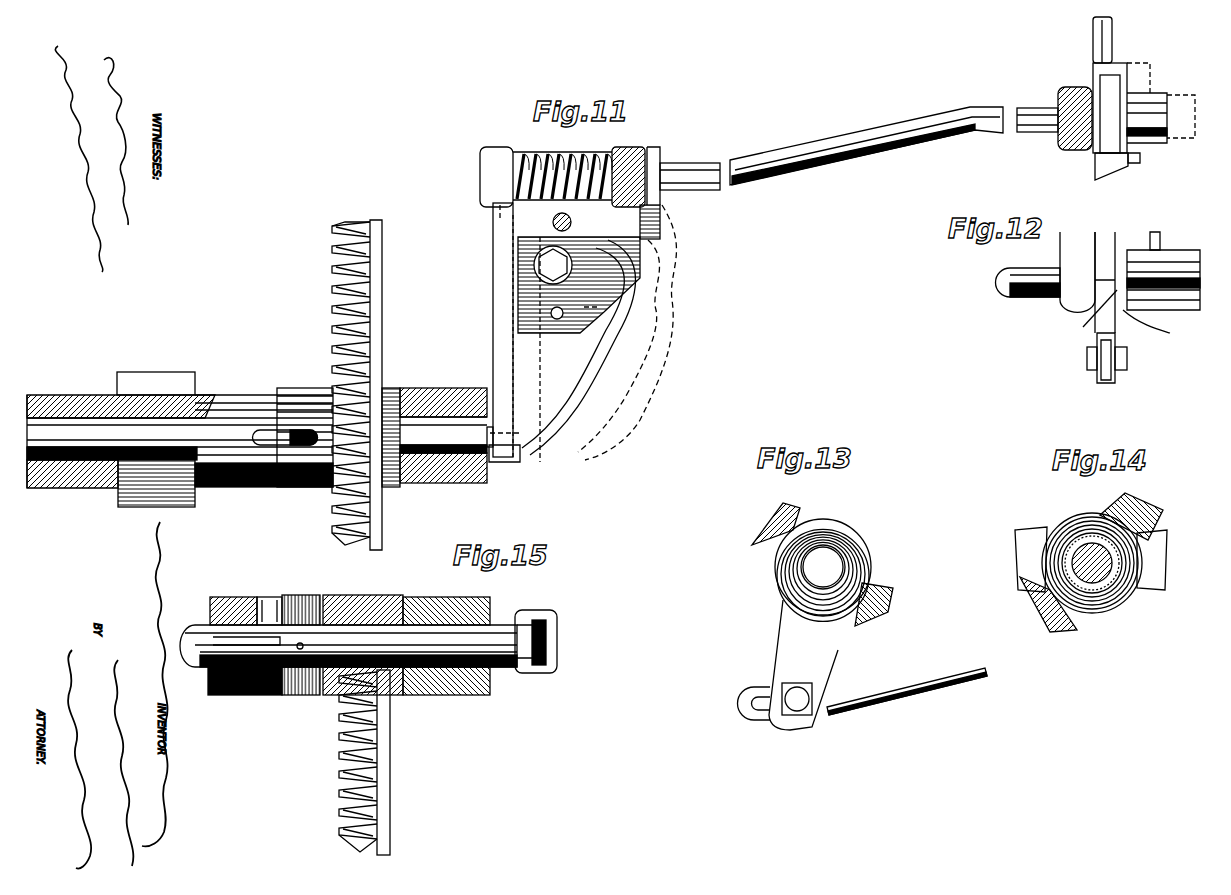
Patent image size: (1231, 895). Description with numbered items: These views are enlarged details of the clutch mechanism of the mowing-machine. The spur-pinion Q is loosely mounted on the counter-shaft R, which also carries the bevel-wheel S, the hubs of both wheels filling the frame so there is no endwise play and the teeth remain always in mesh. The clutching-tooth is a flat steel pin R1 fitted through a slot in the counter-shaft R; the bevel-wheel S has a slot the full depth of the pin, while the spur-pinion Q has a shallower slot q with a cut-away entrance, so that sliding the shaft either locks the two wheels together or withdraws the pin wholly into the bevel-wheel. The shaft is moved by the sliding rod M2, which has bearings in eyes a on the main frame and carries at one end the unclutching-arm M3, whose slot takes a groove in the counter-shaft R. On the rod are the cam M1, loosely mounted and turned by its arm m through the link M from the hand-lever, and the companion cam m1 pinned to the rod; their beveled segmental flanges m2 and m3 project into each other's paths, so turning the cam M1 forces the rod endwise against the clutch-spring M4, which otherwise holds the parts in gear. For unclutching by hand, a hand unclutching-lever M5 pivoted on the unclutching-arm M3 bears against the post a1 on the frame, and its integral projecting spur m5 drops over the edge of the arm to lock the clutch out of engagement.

In FIG. 11, the spur-pinion Q is at (143, 383).
In FIG. 15, the spur-pinion Q is at (227, 598).
In FIG. 11, the counter-shaft R is at (93, 470).
In FIG. 15, the counter-shaft R is at (197, 633).
In FIG. 11, the flat steel pin R1 is at (270, 437).
In FIG. 15, the flat steel pin R1 is at (303, 597).
In FIG. 11, the slot q is at (258, 483).
In FIG. 15, the slot q is at (268, 600).
In FIG. 11, the bevel-wheel S is at (370, 328).
In FIG. 15, the bevel-wheel S is at (377, 757).
In FIG. 12, the eyes a is at (1077, 272).
In FIG. 11, the post a1 is at (553, 222).
In FIG. 11, the link M is at (1107, 42).
In FIG. 12, the link M is at (1108, 373).
In FIG. 13, the link M is at (923, 690).
In FIG. 12, the cam M1 is at (1107, 263).
In FIG. 13, the cam M1 is at (860, 550).
In FIG. 11, the sliding rod M2 is at (825, 152).
In FIG. 12, the sliding rod M2 is at (1020, 296).
In FIG. 11, the unclutching-arm M3 is at (512, 298).
In FIG. 15, the unclutching-arm M3 is at (552, 643).
In FIG. 11, the clutch-spring M4 is at (585, 152).
In FIG. 11, the hand unclutching-lever M5 is at (575, 357).
In FIG. 12, the arm m is at (1120, 333).
In FIG. 13, the arm m is at (793, 658).
In FIG. 11, the companion cam m1 is at (1142, 163).
In FIG. 12, the companion cam m1 is at (1160, 244).
In FIG. 14, the companion cam m1 is at (1105, 523).
In FIG. 12, the projecting flanges m2 is at (1123, 317).
In FIG. 13, the projecting flanges m2 is at (758, 530).
In FIG. 13, the projecting flanges m3 is at (892, 603).
In FIG. 14, the projecting flanges m3 is at (1183, 560).
In FIG. 11, the projecting spur m5 is at (600, 309).